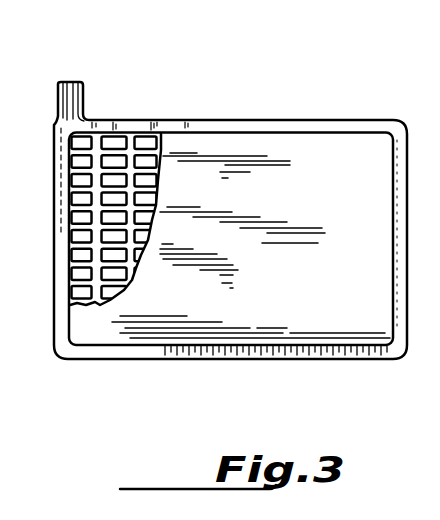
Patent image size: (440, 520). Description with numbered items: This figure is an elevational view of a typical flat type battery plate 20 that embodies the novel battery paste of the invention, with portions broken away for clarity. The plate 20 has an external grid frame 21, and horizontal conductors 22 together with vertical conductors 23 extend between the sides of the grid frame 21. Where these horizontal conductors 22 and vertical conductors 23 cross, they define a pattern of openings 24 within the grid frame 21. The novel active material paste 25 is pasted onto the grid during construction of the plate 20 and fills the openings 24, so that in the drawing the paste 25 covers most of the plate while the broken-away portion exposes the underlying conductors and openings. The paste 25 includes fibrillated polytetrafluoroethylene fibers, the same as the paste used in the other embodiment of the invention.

The plate 20 is at (299, 105).
The grid frame 21 is at (347, 360).
The horizontal conductors 22 is at (76, 206).
The vertical conductors 23 is at (127, 140).
The openings 24 is at (80, 262).
The active material paste 25 is at (163, 305).